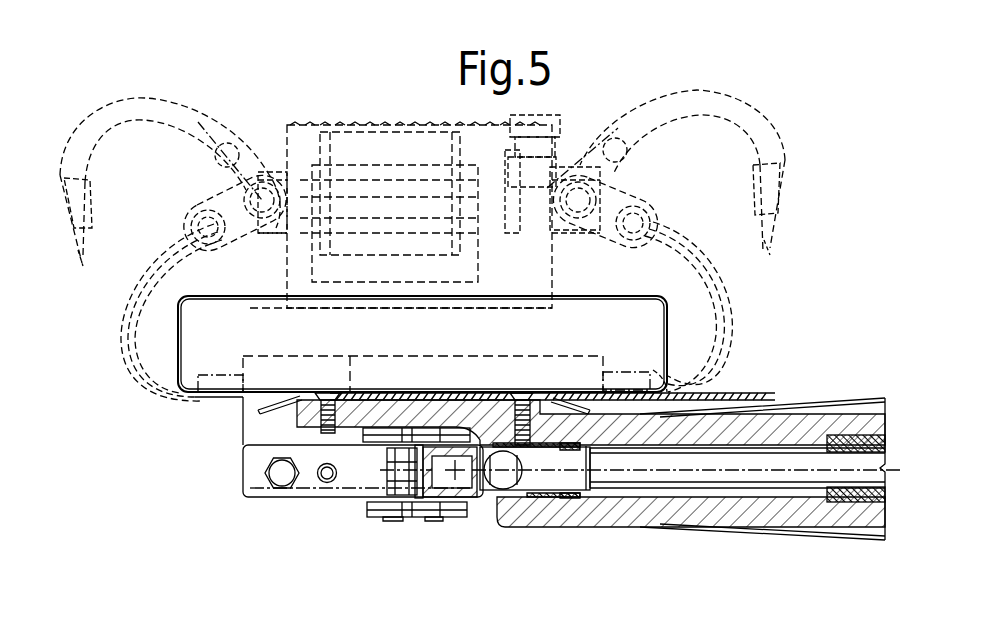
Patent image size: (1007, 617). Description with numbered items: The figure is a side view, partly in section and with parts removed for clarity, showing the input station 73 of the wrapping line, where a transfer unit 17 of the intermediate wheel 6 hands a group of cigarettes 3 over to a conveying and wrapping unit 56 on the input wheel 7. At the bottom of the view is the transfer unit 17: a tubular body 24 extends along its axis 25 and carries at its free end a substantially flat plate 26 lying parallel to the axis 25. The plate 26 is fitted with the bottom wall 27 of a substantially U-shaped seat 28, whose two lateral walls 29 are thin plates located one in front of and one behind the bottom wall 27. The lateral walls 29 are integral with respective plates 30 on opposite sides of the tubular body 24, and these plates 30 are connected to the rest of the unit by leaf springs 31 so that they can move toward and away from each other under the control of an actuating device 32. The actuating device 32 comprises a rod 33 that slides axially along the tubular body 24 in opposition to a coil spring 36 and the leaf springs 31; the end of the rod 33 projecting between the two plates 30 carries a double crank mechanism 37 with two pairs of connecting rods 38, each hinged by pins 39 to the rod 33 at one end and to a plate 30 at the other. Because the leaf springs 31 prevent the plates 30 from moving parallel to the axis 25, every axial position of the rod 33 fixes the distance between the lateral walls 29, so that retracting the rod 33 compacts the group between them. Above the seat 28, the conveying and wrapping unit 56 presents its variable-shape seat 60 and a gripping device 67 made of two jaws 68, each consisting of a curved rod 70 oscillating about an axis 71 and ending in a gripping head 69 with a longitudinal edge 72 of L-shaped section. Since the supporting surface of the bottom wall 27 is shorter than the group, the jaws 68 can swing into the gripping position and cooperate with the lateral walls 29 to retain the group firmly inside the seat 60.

The cigarettes 3 is at (552, 378).
The intermediate wheel 6 is at (140, 464).
The input wheel 7 is at (76, 106).
The transfer unit 17 is at (210, 460).
The tubular body 24 is at (854, 433).
The axis 25 is at (784, 468).
The plate 26 is at (350, 420).
The bottom wall 27 is at (272, 410).
The seat 28 is at (182, 393).
The lateral walls 29 is at (192, 320).
The plates 30 is at (258, 462).
The leaf springs 31 is at (837, 410).
The actuating device 32 is at (878, 388).
The rod 33 is at (809, 480).
The coil spring 36 is at (884, 442).
The double crank mechanism 37 is at (466, 520).
The connecting rods 38 is at (372, 443).
The pins 39 is at (400, 500).
The conveying and wrapping unit 56 is at (573, 137).
The variable-shape seat 60 is at (148, 92).
The gripping device 67 is at (247, 120).
The jaws 68 is at (191, 104).
The gripping head 69 is at (92, 206).
The curved rod 70 is at (124, 121).
The axis 71 is at (263, 228).
The longitudinal edge 72 is at (84, 254).
The input station 73 is at (108, 318).